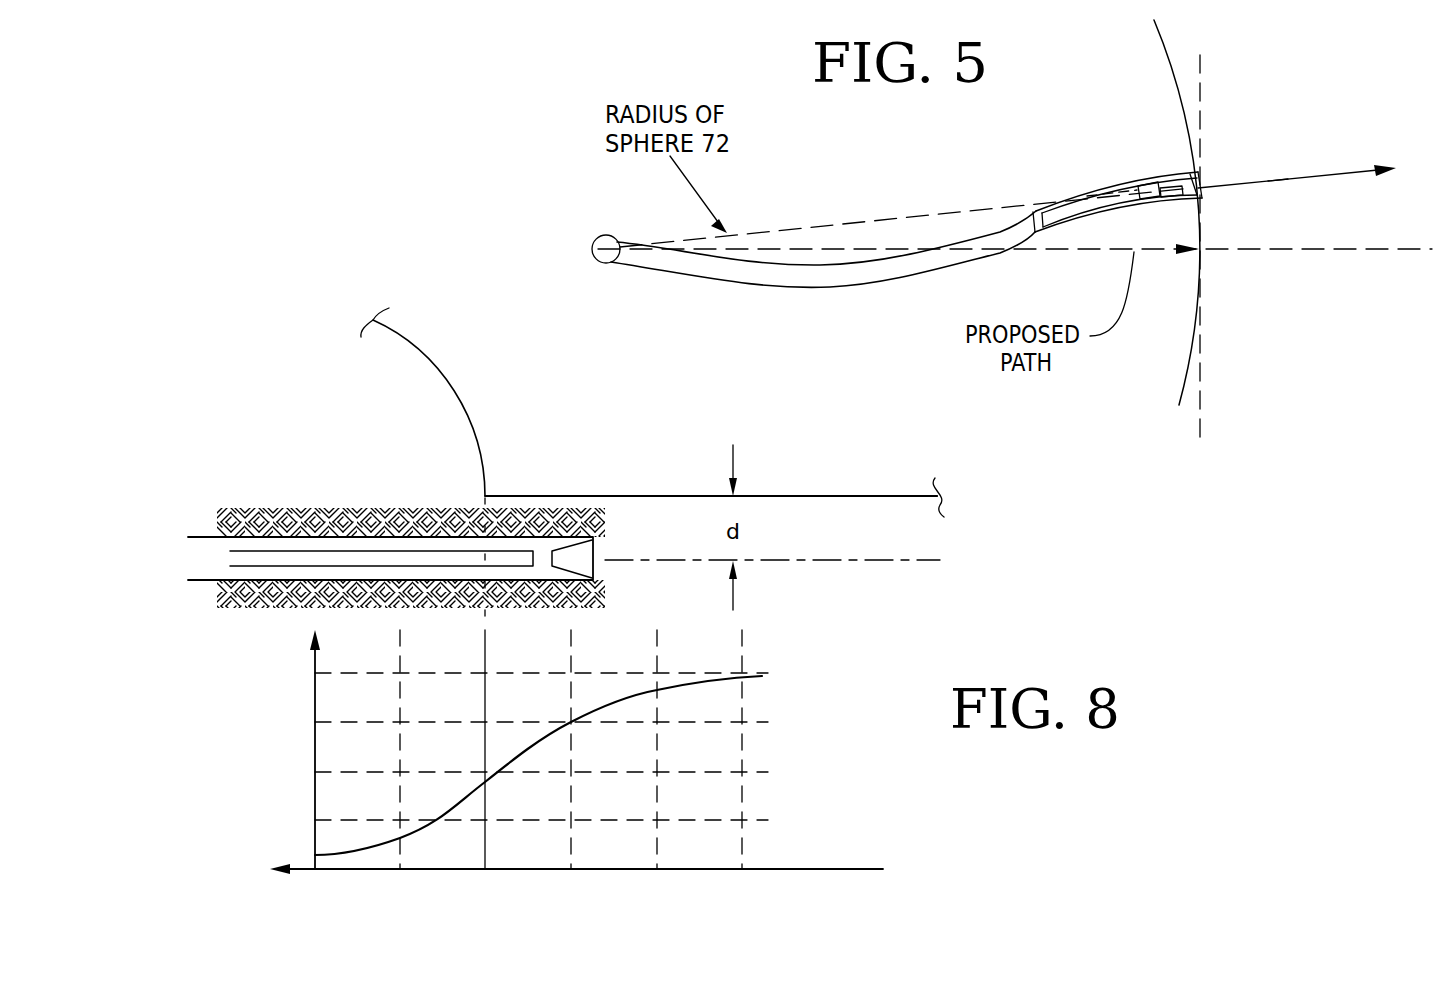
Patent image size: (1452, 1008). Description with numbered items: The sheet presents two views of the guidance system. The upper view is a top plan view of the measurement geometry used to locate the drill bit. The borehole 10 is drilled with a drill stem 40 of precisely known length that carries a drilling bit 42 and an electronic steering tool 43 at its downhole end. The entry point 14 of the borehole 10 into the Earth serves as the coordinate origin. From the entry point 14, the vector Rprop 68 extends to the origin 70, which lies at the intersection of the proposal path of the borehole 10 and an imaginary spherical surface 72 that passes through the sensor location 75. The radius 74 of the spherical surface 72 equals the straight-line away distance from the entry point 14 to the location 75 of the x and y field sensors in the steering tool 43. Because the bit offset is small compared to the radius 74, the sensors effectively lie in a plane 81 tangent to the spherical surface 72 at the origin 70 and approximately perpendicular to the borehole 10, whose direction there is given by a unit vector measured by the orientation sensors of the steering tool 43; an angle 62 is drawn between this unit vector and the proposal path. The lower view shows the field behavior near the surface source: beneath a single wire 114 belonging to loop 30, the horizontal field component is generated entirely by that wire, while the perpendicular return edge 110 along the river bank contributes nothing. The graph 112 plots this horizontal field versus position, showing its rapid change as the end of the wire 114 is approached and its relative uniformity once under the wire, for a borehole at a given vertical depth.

In FIG. 5, the borehole 10 is at (1008, 236).
In FIG. 8, the borehole 10 is at (205, 537).
In FIG. 5, the entry point 14 is at (594, 262).
In FIG. 8, the loop 30 is at (826, 482).
In FIG. 5, the drill stem 40 is at (1072, 212).
In FIG. 8, the drill stem 40 is at (407, 558).
In FIG. 5, the drilling bit 42 is at (1180, 172).
In FIG. 5, the electronic steering tool 43 is at (1148, 190).
In FIG. 5, the angle between unit vector and path 62 is at (1277, 183).
In FIG. 5, the vector Rprop 68 is at (790, 250).
In FIG. 5, the origin 70 is at (1205, 250).
In FIG. 5, the spherical surface 72 is at (1177, 92).
In FIG. 5, the radius 74 is at (878, 222).
In FIG. 5, the location of the x and y field sensors 75 is at (1200, 185).
In FIG. 5, the plane 81 is at (1202, 402).
In FIG. 8, the edge 110 is at (478, 456).
In FIG. 8, the graph 112 is at (622, 703).
In FIG. 8, the wire 114 is at (577, 496).